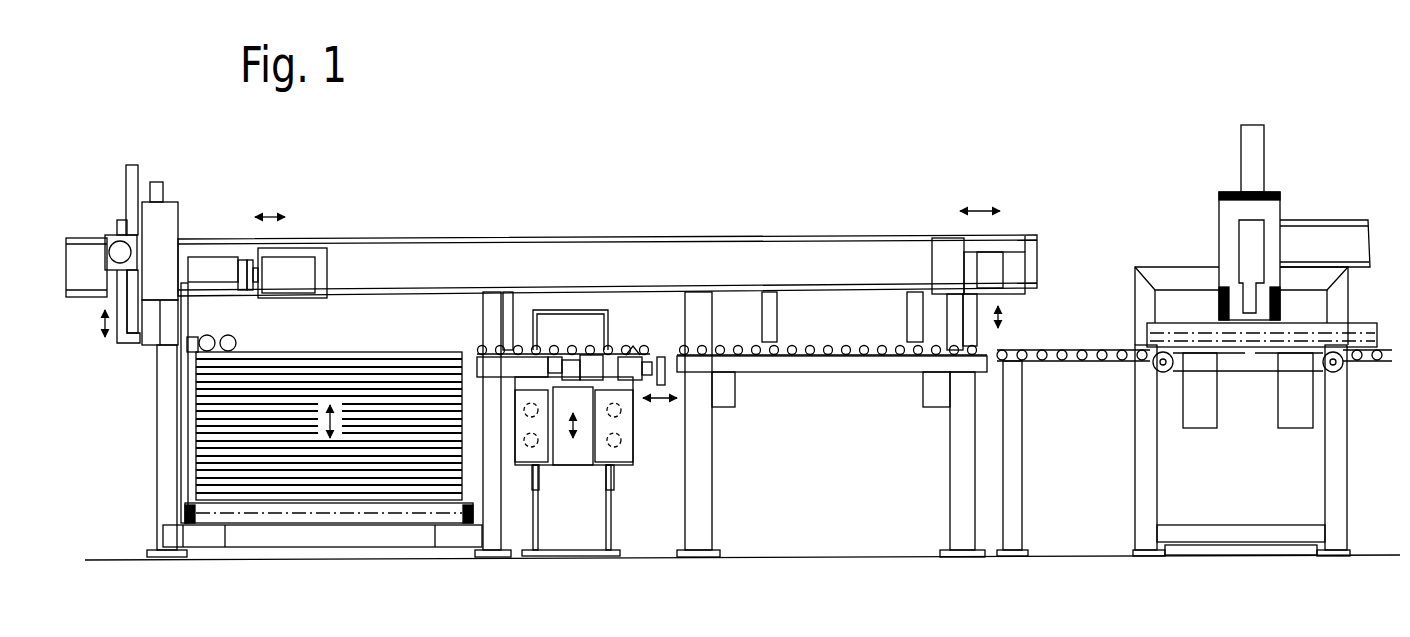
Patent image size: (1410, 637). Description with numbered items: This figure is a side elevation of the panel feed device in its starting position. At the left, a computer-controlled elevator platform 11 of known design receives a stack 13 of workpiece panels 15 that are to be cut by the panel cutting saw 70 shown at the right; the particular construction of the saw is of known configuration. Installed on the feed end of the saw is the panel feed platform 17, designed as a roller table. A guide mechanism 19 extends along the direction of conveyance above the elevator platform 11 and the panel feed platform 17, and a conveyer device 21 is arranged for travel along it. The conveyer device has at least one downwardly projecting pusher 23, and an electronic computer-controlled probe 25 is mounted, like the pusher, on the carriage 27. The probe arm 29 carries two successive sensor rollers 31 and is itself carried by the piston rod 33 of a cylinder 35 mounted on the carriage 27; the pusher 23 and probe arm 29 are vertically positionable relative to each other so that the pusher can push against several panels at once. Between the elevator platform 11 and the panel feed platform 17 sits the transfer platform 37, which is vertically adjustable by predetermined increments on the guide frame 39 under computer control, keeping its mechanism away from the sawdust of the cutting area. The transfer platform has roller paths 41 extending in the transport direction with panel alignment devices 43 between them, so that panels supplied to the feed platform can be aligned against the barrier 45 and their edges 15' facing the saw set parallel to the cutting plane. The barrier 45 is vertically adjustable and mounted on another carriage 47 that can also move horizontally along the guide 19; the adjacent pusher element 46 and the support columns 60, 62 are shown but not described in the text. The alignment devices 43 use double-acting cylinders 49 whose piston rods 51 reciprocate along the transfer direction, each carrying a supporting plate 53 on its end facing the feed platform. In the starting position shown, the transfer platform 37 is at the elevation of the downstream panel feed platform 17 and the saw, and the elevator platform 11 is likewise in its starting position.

The elevator platform 11 is at (275, 548).
The stack 13 is at (185, 432).
The workpiece panels 15 is at (329, 413).
The edges 15' is at (490, 333).
The panel feed platform 17 is at (860, 378).
The guide mechanism 19 is at (484, 236).
The conveyer device 21 is at (188, 214).
The pusher 23 is at (195, 333).
The probe 25 is at (113, 232).
The carriage 27 is at (287, 252).
The probe arm 29 is at (144, 345).
The sensor rollers 31 is at (235, 336).
The piston rod 33 is at (127, 340).
The cylinder 35 is at (163, 248).
The transfer platform 37 is at (615, 343).
The guide frame 39 is at (580, 507).
The roller paths 41 is at (551, 364).
The panel alignment devices 43 is at (636, 387).
The barrier 45 is at (970, 310).
The pusher 46 is at (1007, 237).
The carriage 47 is at (947, 258).
The cylinders 49 is at (633, 352).
The piston rods 51 is at (642, 352).
The supporting plate 53 is at (667, 383).
The support column 60 is at (772, 312).
The support column 62 is at (912, 328).
The panel cutting saw 70 is at (1203, 203).